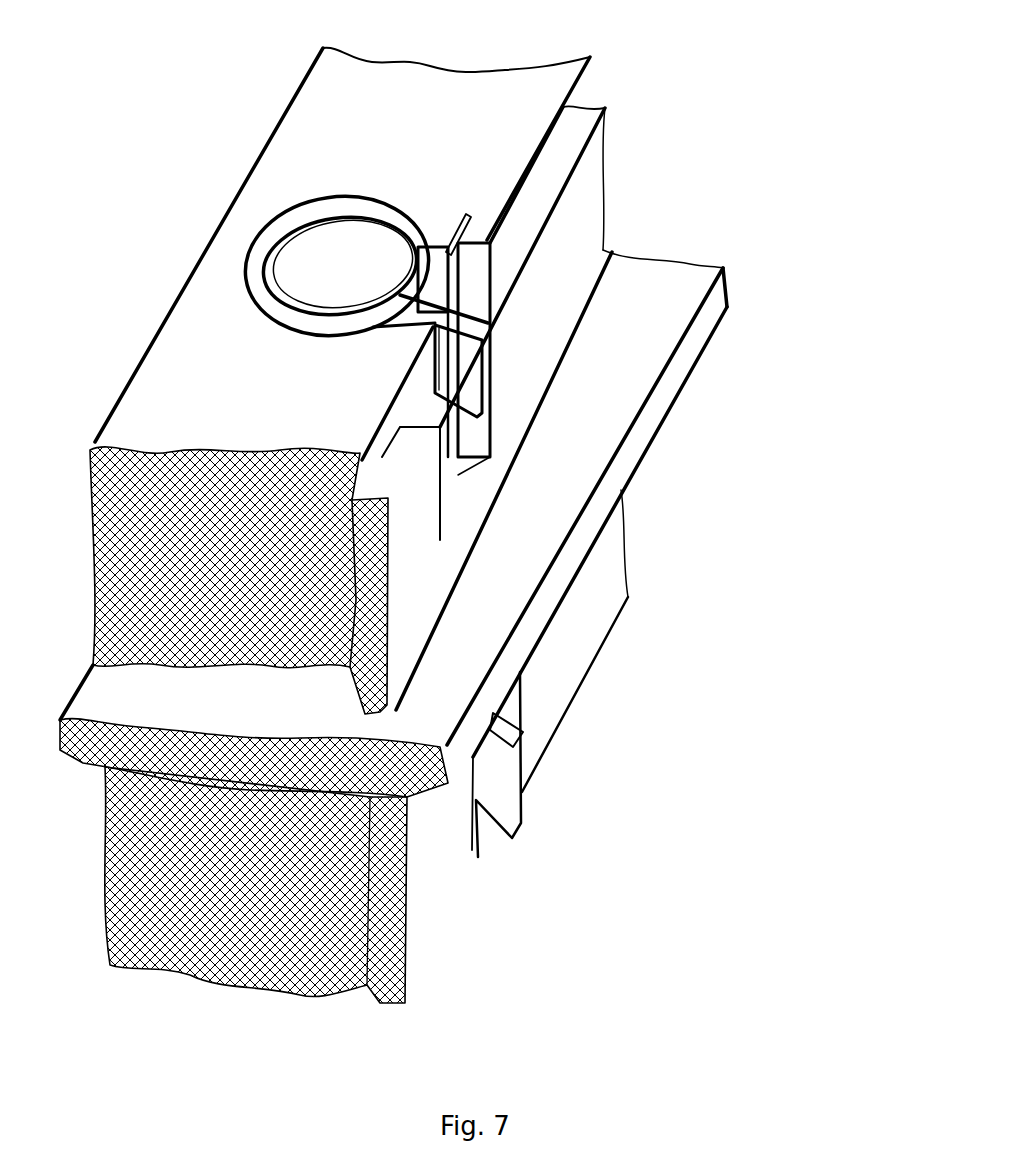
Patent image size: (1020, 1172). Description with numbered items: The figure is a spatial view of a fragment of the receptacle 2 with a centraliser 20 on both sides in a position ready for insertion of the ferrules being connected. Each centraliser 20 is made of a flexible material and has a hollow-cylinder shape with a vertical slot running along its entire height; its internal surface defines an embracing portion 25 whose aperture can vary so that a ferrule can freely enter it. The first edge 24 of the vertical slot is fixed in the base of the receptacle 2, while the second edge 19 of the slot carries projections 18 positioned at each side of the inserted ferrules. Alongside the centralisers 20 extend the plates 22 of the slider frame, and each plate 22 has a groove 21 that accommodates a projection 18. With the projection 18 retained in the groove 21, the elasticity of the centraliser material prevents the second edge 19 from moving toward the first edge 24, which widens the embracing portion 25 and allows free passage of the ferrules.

The receptacle 2 is at (273, 665).
The projections 18 is at (487, 372).
The second edge 19 is at (443, 313).
The centraliser 20 is at (267, 279).
The groove 21 is at (470, 490).
The plate 22 is at (568, 272).
The first edge 24 is at (420, 250).
The embracing portion 25 is at (340, 296).